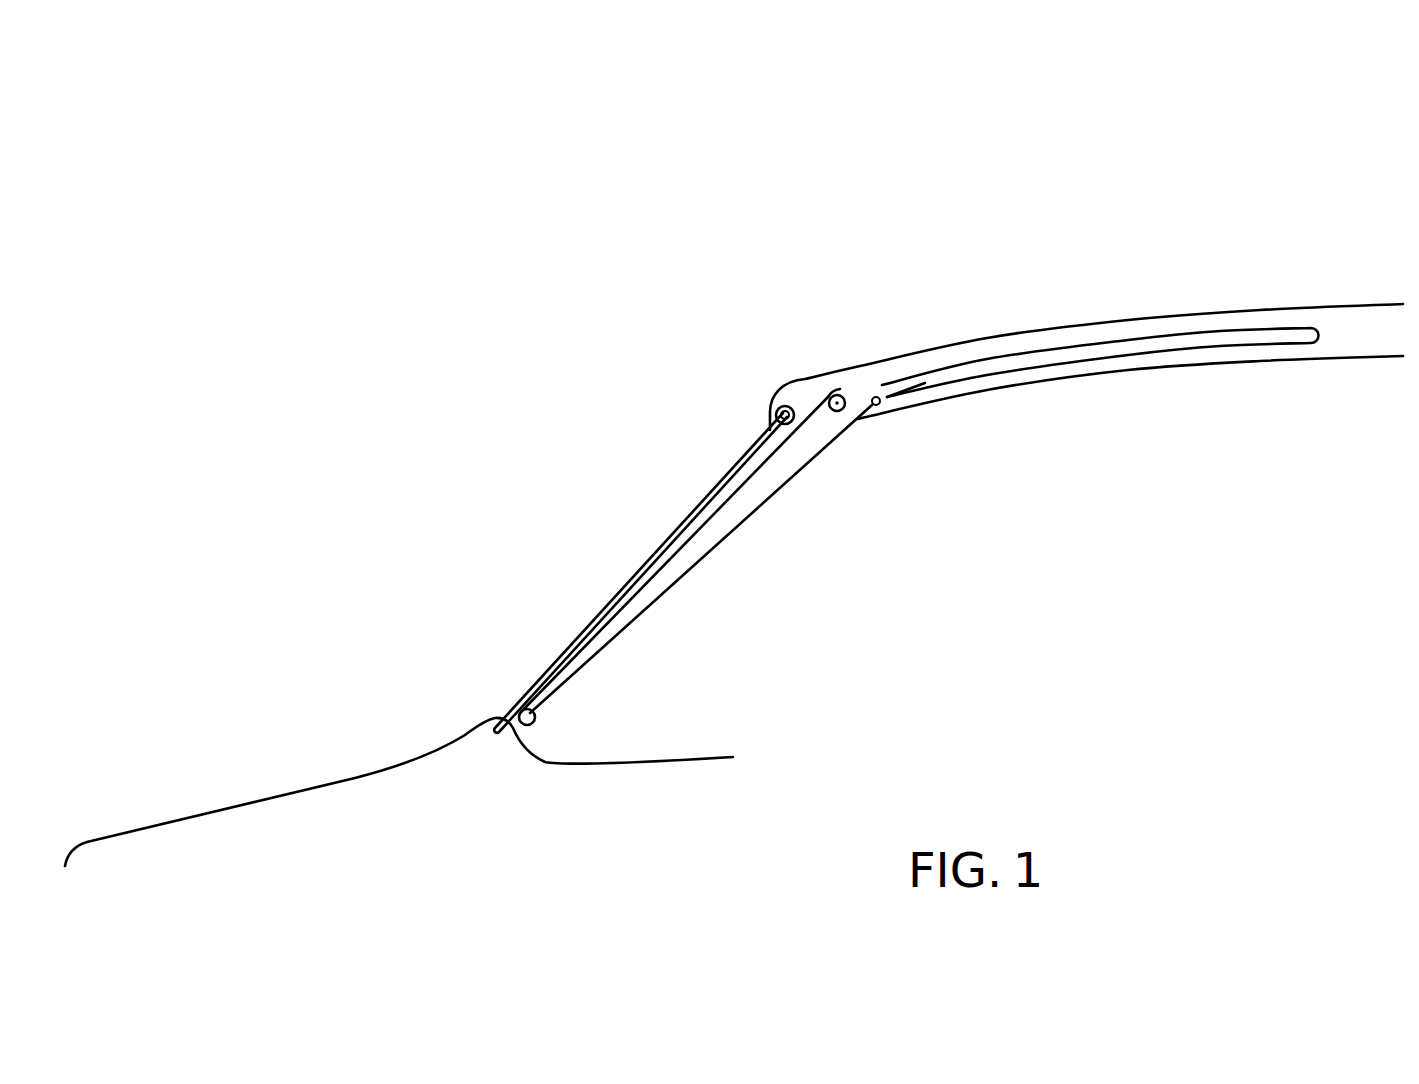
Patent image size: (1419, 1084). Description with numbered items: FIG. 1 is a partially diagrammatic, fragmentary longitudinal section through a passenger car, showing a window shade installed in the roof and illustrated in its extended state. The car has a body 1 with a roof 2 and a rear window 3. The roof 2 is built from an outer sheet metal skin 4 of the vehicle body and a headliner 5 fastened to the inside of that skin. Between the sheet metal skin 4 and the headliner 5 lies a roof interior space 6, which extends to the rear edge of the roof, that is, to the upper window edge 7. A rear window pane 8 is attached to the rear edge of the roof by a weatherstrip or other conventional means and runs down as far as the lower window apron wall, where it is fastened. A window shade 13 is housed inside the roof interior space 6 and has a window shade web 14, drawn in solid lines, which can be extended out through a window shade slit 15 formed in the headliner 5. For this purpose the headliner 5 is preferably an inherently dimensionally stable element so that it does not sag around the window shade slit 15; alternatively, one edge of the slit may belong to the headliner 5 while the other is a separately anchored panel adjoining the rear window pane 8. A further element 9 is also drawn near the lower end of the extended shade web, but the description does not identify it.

The body 1 is at (308, 730).
The roof 2 is at (1086, 315).
The rear window 3 is at (680, 494).
The outer sheet metal skin 4 is at (1318, 307).
The headliner 5 is at (1353, 362).
The roof interior space 6 is at (1379, 346).
The upper window edge 7 is at (771, 405).
The rear window pane 8 is at (597, 613).
The pivot bearing 9 is at (498, 720).
The window shade 13 is at (860, 382).
The window shade web 14 is at (722, 510).
The window shade slit 15 is at (855, 422).